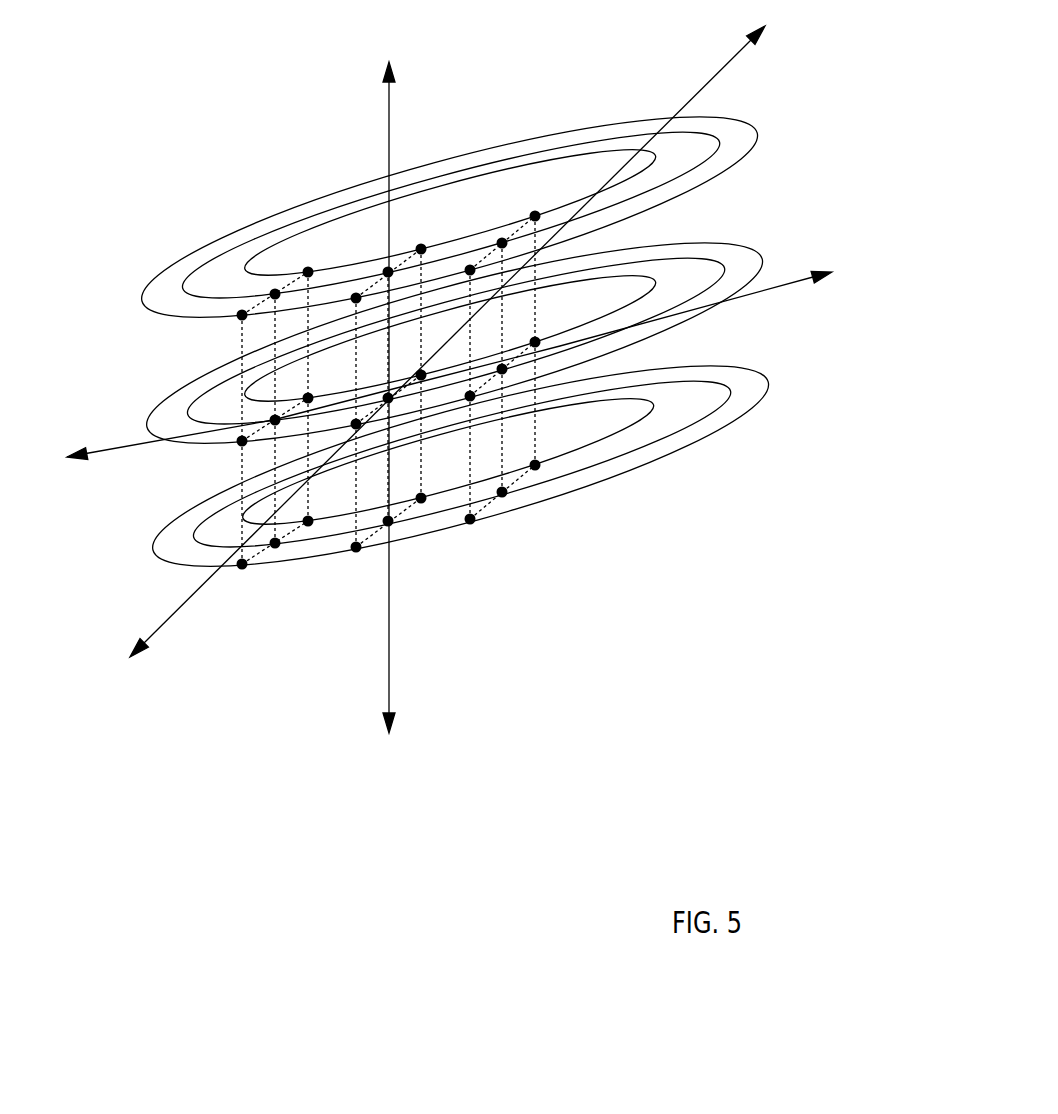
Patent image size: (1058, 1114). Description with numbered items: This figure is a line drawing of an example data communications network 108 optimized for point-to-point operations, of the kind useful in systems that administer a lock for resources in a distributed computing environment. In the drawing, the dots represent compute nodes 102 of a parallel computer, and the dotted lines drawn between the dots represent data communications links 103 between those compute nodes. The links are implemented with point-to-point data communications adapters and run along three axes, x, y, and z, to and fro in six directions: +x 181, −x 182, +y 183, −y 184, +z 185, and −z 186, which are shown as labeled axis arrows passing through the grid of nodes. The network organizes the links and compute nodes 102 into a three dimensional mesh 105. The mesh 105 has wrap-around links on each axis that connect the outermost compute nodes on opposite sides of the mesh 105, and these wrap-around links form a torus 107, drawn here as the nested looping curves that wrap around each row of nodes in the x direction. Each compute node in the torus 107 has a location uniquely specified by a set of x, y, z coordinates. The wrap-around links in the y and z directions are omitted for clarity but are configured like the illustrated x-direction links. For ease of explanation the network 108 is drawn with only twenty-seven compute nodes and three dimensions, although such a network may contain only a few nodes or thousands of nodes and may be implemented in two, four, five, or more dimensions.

The compute nodes 102 is at (470, 520).
The data communications links 103 is at (240, 342).
The three dimensional mesh 105 is at (535, 216).
The torus 107 is at (218, 213).
The data communications network 108 is at (287, 806).
The +x direction 181 is at (865, 304).
The −x direction 182 is at (35, 495).
The +y direction 183 is at (778, 53).
The −y direction 184 is at (127, 703).
The +z direction 185 is at (375, 53).
The −z direction 186 is at (407, 791).